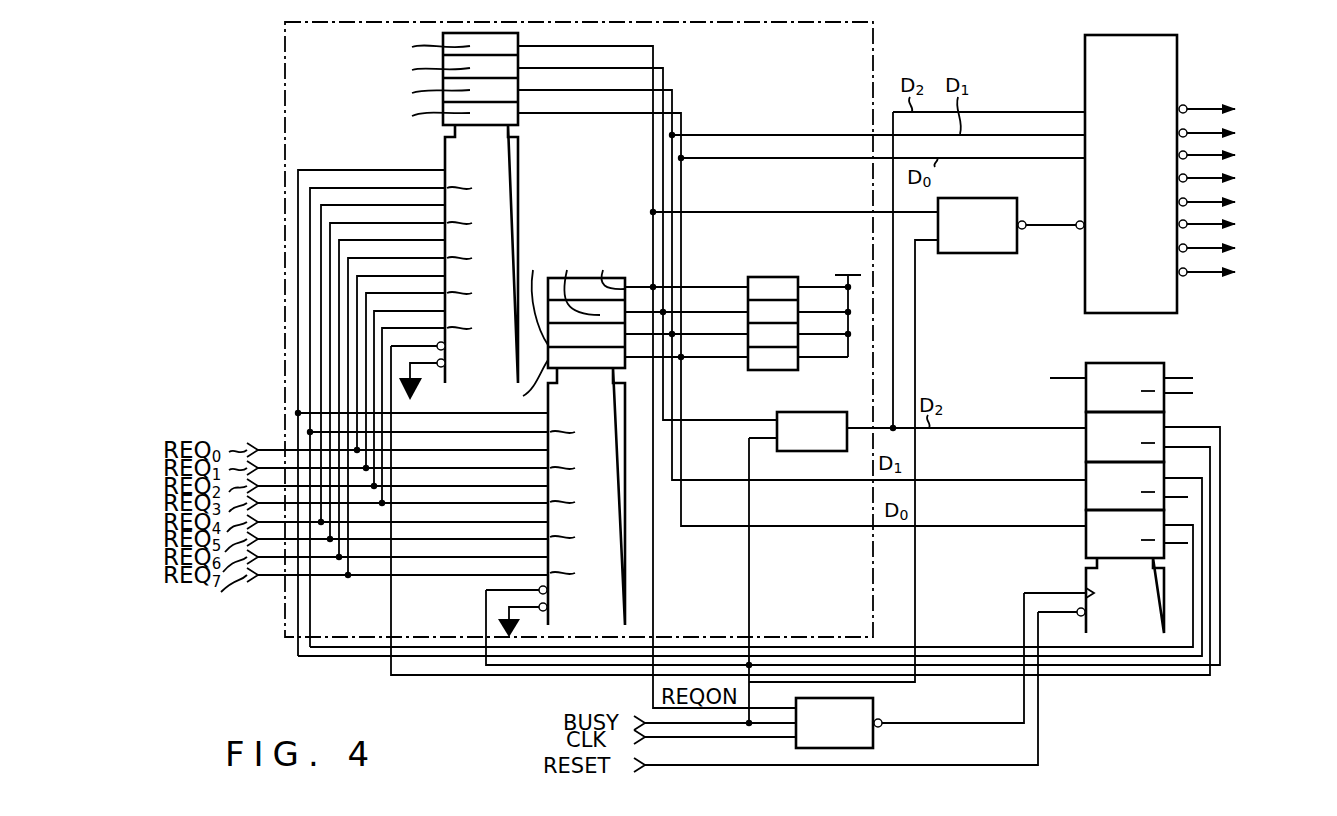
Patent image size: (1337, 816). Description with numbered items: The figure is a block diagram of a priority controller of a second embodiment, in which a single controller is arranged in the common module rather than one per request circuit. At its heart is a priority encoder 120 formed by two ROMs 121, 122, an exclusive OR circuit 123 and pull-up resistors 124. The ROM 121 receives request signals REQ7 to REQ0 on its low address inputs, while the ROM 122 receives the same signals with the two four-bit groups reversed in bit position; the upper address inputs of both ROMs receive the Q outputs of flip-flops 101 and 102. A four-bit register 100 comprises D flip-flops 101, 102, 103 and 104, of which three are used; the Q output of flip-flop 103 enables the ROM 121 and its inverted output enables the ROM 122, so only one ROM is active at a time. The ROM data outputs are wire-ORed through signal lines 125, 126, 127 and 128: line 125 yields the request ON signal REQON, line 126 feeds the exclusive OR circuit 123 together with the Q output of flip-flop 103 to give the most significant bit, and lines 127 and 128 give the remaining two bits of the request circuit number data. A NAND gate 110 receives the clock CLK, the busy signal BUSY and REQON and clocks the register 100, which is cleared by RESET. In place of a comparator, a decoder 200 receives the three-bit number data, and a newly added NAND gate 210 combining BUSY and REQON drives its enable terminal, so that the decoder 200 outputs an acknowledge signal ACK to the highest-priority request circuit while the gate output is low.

The 4-bit register 100 is at (1086, 572).
The D flip-flop 101 is at (1086, 545).
The D flip-flop 102 is at (1086, 497).
The D flip-flop 103 is at (1086, 450).
The D flip-flop 104 is at (1086, 397).
The NAND gate 110 is at (873, 745).
The priority encoder 120 is at (285, 638).
The ROM 121 is at (625, 605).
The ROM 122 is at (518, 177).
The exclusive OR circuit 123 is at (827, 411).
The pull-up resistors 124 is at (753, 281).
The signal line 125 is at (657, 48).
The signal line 126 is at (667, 71).
The signal line 127 is at (676, 94).
The signal line 128 is at (685, 117).
The decoder 200 is at (1085, 47).
The NAND gate 210 is at (993, 254).